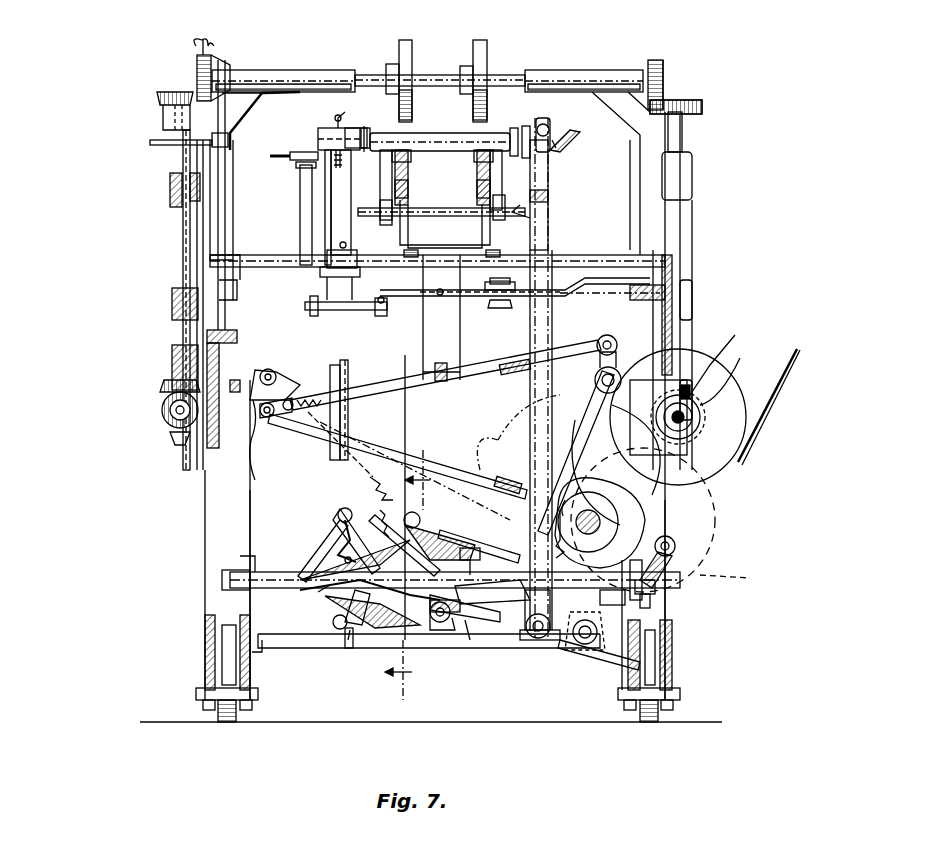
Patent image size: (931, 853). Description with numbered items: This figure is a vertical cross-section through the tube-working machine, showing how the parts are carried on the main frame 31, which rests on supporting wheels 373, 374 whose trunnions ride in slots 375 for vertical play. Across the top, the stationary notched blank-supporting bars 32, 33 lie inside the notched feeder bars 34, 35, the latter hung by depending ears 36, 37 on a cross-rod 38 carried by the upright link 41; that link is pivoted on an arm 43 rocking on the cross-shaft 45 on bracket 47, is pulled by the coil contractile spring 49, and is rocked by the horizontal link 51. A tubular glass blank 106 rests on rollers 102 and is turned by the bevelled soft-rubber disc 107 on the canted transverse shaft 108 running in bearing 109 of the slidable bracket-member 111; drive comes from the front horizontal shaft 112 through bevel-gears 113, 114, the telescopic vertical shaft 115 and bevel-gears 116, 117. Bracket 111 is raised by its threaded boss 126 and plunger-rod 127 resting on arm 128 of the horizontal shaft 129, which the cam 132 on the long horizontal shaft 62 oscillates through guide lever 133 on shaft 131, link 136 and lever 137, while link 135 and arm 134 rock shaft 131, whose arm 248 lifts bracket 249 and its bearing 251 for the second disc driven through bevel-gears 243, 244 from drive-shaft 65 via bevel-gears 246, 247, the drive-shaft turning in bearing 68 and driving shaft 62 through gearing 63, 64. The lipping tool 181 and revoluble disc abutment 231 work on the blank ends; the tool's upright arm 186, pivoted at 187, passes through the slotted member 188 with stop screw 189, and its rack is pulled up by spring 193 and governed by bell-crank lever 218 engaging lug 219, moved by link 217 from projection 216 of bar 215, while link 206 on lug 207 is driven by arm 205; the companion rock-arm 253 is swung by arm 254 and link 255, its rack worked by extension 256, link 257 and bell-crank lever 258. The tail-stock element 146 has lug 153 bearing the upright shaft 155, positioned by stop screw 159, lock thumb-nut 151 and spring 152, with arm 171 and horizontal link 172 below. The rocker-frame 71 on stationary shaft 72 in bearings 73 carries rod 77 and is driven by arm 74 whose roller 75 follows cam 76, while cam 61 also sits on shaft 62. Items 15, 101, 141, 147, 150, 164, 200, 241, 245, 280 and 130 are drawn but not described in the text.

The bearing 109 is at (285, 70).
The transverse shaft 108 is at (372, 75).
The bearing 251 is at (583, 72).
The gear 241 is at (406, 40).
The bevelled soft-rubber disc 107 is at (487, 50).
The bevel-gear 117 is at (197, 66).
The bevel-gear 243 is at (660, 62).
The bevel-gear 244 is at (700, 105).
The bracket 245 is at (692, 165).
The bracket 249 is at (638, 160).
The bevel-gear 116 is at (165, 98).
The vertical shaft 115 is at (183, 283).
The threaded boss 126 is at (212, 143).
The plunger-rod 127 is at (233, 200).
The bracket-member 111 is at (238, 125).
The arm 128 is at (230, 477).
The bevel-gear 113 is at (162, 410).
The bevel-gear 114 is at (162, 392).
The front horizontal shaft 112 is at (166, 437).
The slots 375 is at (208, 708).
The supporting wheel 373 is at (230, 722).
The supporting wheel 374 is at (648, 722).
The cross-rod 38 is at (548, 215).
The upright arm 186 is at (540, 325).
The revoluble disc abutment 231 is at (548, 124).
The lipping or rim forming tool 181 is at (562, 138).
The cross beam 147 is at (283, 267).
The slotted member 188 is at (587, 290).
The rollers 102 is at (405, 140).
The tubular glass blank 106 is at (447, 133).
The bearing 101 is at (408, 165).
The notched feeder bar 34 is at (382, 165).
The depending ear 36 is at (382, 200).
The blank-supporting bar 32 is at (408, 190).
The blank-supporting bar 33 is at (477, 190).
The notched feeder bar 35 is at (502, 166).
The depending ear 37 is at (503, 200).
The spring clip 280 is at (410, 251).
The cylinder 164 is at (315, 129).
The lock thumb-nut 151 is at (338, 120).
The pin 141 is at (373, 124).
The stop screw 159 is at (278, 152).
The lug 153 is at (300, 166).
The spring 152 is at (336, 165).
The upright shaft 155 is at (325, 214).
The tail-stock element 146 is at (340, 226).
The bracket 150 is at (322, 270).
The arm 171 is at (334, 310).
The horizontal link 172 is at (380, 316).
The stop screw 189 is at (485, 285).
The coil contractile spring 49 is at (440, 296).
The horizontal link 51 is at (447, 366).
The upright link 41 is at (368, 496).
The horizontal shaft 129 is at (276, 372).
The lever 137 is at (266, 420).
The link 135 is at (494, 382).
The link 136 is at (441, 463).
The link 130 is at (415, 471).
The upright rock-arm 253 is at (342, 478).
The arm 134 is at (607, 335).
The shaft 131 is at (595, 382).
The guide lever 133 is at (588, 417).
The coil contractile spring 193 is at (498, 445).
The direction arrow 15 is at (420, 575).
The gearing 64 is at (750, 425).
The drive-shaft 65 is at (690, 408).
The bevel-gear 246 is at (718, 356).
The bevel-gear 247 is at (738, 372).
The bearing 68 is at (735, 472).
The cam 76 is at (645, 518).
The arm 248 is at (616, 465).
The horizontal shaft 62 is at (591, 510).
The cam 132 is at (585, 540).
The lug 219 is at (668, 537).
The roller 75 is at (676, 540).
The arm 74 is at (656, 566).
The gearing 63 is at (739, 579).
The bracket 47 is at (240, 600).
The cross-shaft 45 is at (250, 570).
The main frame 31 is at (245, 491).
The projection 216 is at (338, 510).
The arm 254 is at (342, 532).
The link 255 is at (320, 556).
The bracket or bar 215 is at (417, 535).
The link 217 is at (455, 546).
The cam 61 is at (481, 540).
The lug 207 is at (480, 555).
The bell-crank lever 258 is at (320, 596).
The lever 200 is at (335, 616).
The extension 256 is at (318, 648).
The link 257 is at (348, 628).
The arm 205 is at (350, 648).
The link 206 is at (446, 622).
The rod 77 is at (450, 632).
The rocker-frame 71 is at (490, 620).
The arm 43 is at (480, 640).
The pivot 187 is at (532, 642).
The bell-crank lever 218 is at (542, 640).
The stationary shaft 72 is at (582, 648).
The bearings 73 is at (608, 660).